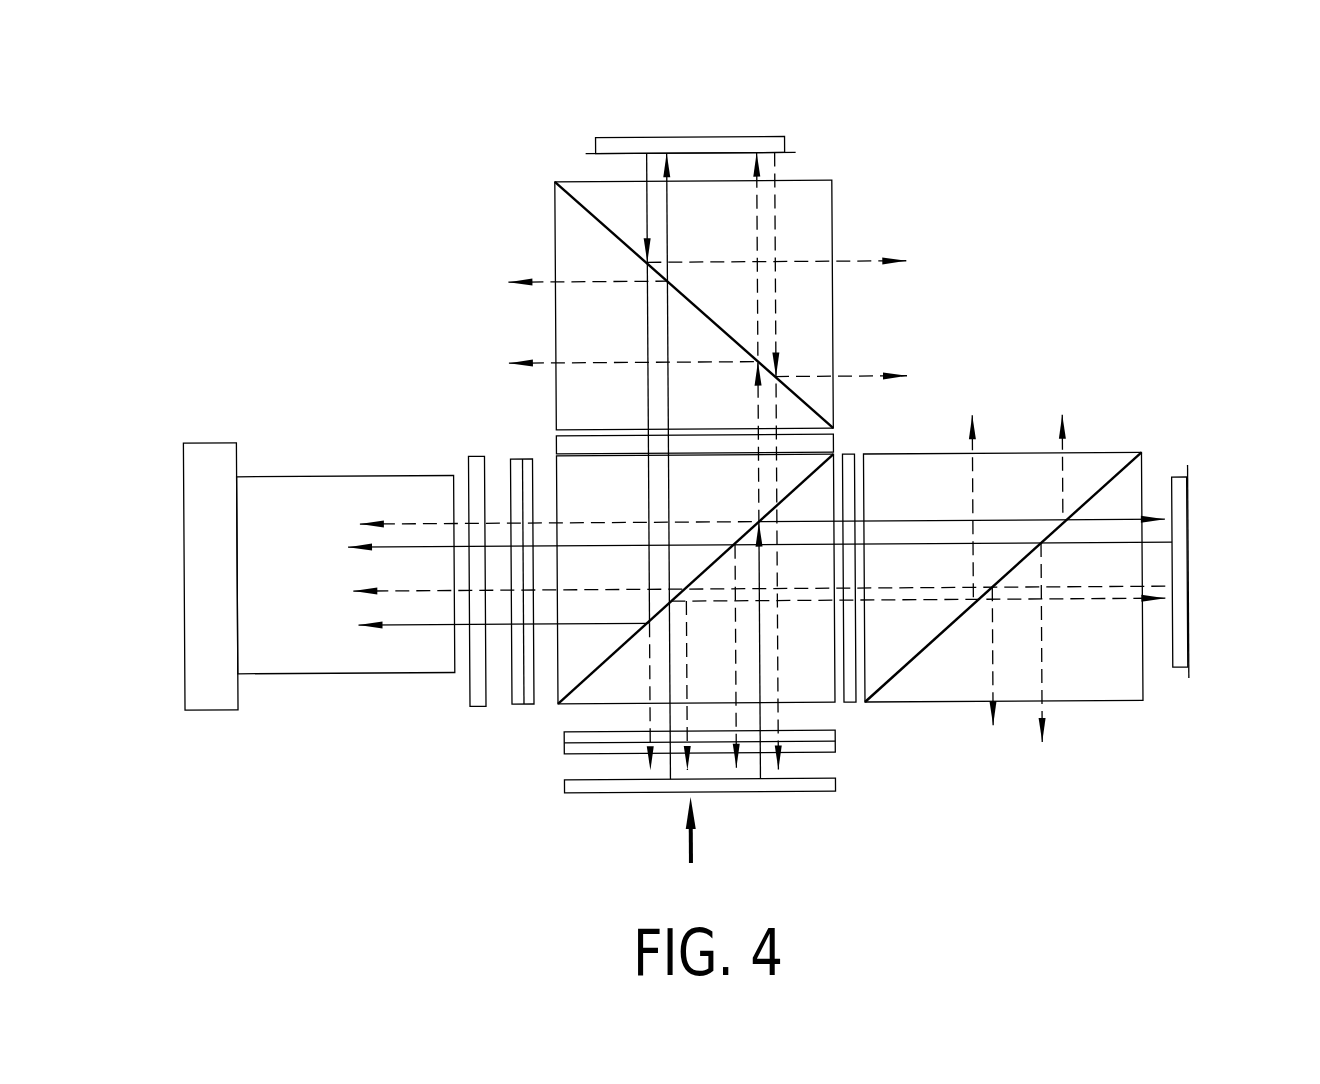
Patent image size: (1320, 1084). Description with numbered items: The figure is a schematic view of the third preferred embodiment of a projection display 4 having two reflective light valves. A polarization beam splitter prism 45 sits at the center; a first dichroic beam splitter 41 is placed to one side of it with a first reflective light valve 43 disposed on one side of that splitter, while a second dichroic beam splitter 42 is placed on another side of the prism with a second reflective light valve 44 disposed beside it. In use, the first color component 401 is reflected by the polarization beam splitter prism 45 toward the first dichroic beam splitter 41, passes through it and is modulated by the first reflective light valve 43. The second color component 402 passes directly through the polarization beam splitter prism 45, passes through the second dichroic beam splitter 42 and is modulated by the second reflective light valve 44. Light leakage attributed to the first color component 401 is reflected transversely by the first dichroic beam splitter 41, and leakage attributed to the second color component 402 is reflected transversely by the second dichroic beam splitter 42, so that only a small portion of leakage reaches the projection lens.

The projection display 4 is at (1050, 288).
The first dichroic beam splitter 41 is at (1063, 682).
The second dichroic beam splitter 42 is at (568, 250).
The first reflective light valve 43 is at (1180, 643).
The second reflective light valve 44 is at (608, 145).
The polarization beam splitter prism 45 is at (805, 678).
The first color component 401 is at (1117, 520).
The second color component 402 is at (669, 336).